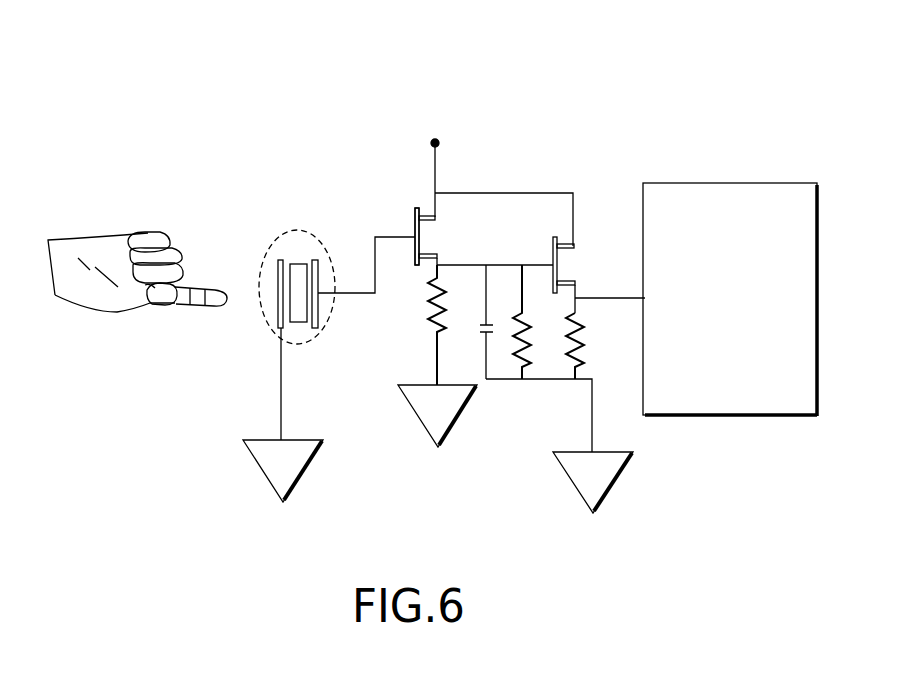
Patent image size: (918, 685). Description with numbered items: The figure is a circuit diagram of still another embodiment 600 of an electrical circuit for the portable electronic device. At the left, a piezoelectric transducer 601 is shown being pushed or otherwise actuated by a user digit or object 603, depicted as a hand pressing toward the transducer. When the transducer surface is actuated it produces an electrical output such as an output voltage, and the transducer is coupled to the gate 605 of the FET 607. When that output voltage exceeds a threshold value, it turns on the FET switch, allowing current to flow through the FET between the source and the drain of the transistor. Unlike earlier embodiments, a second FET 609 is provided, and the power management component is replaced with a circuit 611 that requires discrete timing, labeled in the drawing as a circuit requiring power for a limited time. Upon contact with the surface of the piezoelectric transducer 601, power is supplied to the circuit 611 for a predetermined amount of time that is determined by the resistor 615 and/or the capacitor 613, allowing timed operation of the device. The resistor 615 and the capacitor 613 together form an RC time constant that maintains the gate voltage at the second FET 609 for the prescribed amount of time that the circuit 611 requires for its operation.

The electrical circuit embodiment 600 is at (630, 52).
The piezoelectric transducer 601 is at (267, 327).
The user digit or object 603 is at (110, 232).
The gate 605 is at (412, 237).
The FET 607 is at (428, 241).
The second FET 609 is at (567, 268).
The circuit requiring power for a limited time 611 is at (785, 183).
The capacitor C1 613 is at (468, 315).
The resistor R1 615 is at (503, 354).